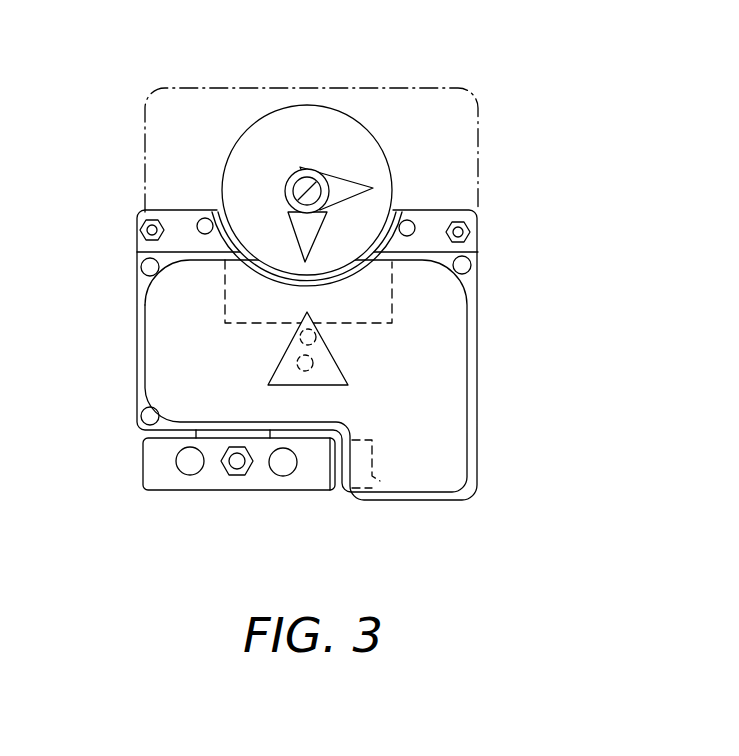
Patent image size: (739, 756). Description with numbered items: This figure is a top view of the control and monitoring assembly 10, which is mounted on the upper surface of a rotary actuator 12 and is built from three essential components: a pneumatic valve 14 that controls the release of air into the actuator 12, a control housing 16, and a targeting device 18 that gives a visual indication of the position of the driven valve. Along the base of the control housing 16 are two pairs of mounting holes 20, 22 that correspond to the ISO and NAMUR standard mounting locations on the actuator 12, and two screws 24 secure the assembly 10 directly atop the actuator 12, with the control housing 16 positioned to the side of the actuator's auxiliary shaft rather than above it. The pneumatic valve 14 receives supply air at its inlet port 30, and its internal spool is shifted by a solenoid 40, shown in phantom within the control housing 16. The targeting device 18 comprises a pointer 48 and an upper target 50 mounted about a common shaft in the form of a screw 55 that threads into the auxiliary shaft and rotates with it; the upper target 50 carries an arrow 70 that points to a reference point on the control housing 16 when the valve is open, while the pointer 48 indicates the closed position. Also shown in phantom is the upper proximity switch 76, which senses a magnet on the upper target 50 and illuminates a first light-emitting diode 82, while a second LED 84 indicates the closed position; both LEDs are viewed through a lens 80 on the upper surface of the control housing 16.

The control and monitoring assembly 10 is at (564, 95).
The rotary actuator 12 is at (143, 130).
The pneumatic valve 14 is at (167, 476).
The control housing 16 is at (455, 325).
The targeting device 18 is at (309, 118).
The mounting holes 20 is at (140, 233).
The mounting holes 22 is at (199, 232).
The screws 24 is at (148, 222).
The inlet port 30 is at (236, 478).
The solenoid 40 is at (386, 482).
The pointer 48 is at (340, 188).
The upper target 50 is at (343, 120).
The screw 55 is at (303, 181).
The arrow 70 is at (310, 227).
The upper proximity switch 76 is at (362, 326).
The lens 80 is at (348, 385).
The first light-emitting diode 82 is at (297, 335).
The second LED 84 is at (297, 363).